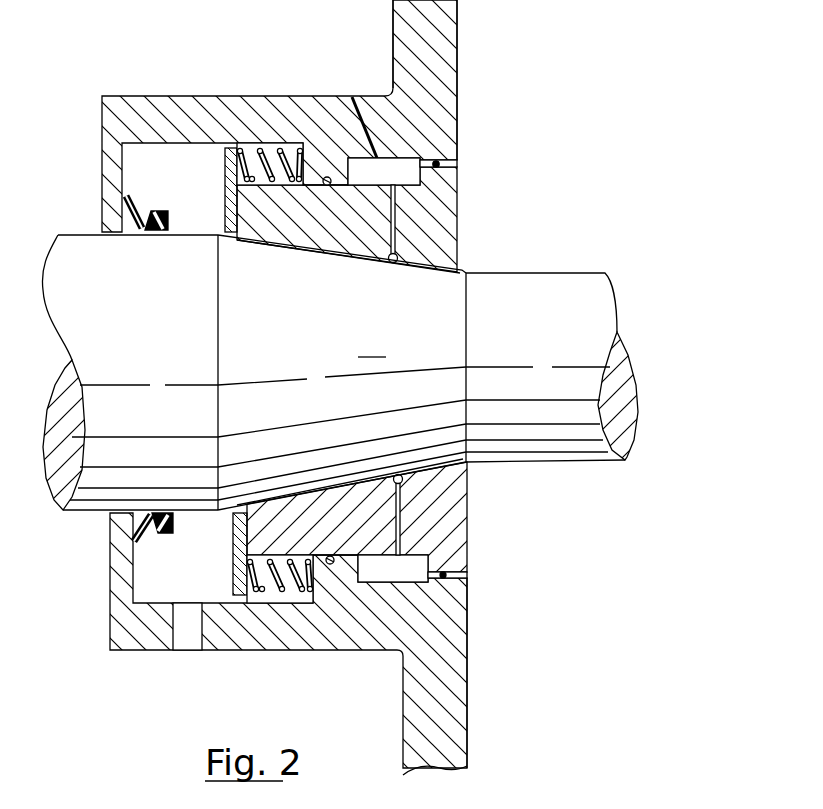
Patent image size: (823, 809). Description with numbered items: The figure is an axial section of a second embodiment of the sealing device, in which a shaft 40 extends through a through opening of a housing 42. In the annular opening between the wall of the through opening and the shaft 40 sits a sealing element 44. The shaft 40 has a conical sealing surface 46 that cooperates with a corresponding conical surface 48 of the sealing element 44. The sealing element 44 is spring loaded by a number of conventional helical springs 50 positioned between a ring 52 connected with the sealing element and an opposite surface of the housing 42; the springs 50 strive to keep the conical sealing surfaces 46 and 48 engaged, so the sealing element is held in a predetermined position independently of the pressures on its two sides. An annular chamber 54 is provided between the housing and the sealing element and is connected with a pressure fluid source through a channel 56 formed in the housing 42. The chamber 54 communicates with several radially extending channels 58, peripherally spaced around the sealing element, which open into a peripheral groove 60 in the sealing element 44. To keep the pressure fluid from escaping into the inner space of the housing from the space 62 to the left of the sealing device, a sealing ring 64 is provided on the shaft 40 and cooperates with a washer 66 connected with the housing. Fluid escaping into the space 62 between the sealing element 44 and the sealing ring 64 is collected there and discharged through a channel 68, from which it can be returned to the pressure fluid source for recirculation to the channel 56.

The shaft 40 is at (507, 284).
The housing 42 is at (448, 88).
The sealing element 44 is at (448, 172).
The conical sealing surface 46 is at (254, 377).
The conical surface 48 is at (345, 256).
The helical springs 50 is at (260, 148).
The ring 52 is at (227, 192).
The annular chamber 54 is at (418, 561).
The channel 56 is at (363, 102).
The radially extending channels 58 is at (362, 252).
The peripheral groove 60 is at (393, 263).
The space 62 is at (183, 237).
The sealing ring 64 is at (147, 238).
The washer 66 is at (263, 387).
The channel 68 is at (190, 640).